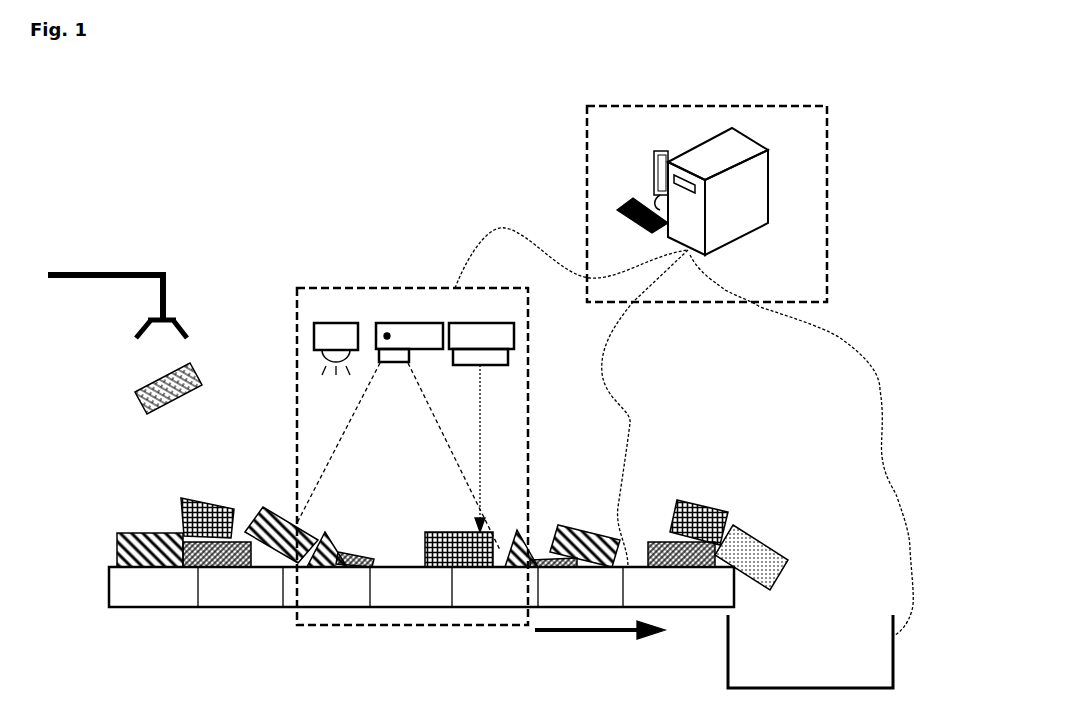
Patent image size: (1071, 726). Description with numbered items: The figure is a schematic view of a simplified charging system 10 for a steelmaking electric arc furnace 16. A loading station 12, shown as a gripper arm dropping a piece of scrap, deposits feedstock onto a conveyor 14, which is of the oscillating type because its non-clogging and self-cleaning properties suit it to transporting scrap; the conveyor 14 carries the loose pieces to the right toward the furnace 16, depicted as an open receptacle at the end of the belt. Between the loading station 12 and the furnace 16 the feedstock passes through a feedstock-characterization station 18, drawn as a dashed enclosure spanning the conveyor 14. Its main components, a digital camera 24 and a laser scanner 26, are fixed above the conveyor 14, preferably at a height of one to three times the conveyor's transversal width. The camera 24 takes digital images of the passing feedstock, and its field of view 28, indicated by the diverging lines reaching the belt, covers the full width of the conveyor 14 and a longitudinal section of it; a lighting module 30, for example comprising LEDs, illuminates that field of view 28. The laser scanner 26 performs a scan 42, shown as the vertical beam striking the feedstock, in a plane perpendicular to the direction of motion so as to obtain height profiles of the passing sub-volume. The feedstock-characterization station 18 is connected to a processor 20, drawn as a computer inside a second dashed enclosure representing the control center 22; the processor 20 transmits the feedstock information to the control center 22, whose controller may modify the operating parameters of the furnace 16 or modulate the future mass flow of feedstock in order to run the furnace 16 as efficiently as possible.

The charging system 10 is at (135, 147).
The loading station 12 is at (63, 274).
The conveyor 14 is at (108, 590).
The electric arc furnace 16 is at (893, 677).
The feedstock-characterization station 18 is at (315, 288).
The processor 20 is at (695, 148).
The control center 22 is at (588, 135).
The digital camera 24 is at (389, 323).
The laser scanner 26 is at (457, 323).
The field of view 28 is at (349, 420).
The lighting module 30 is at (322, 323).
The scan 42 is at (482, 428).